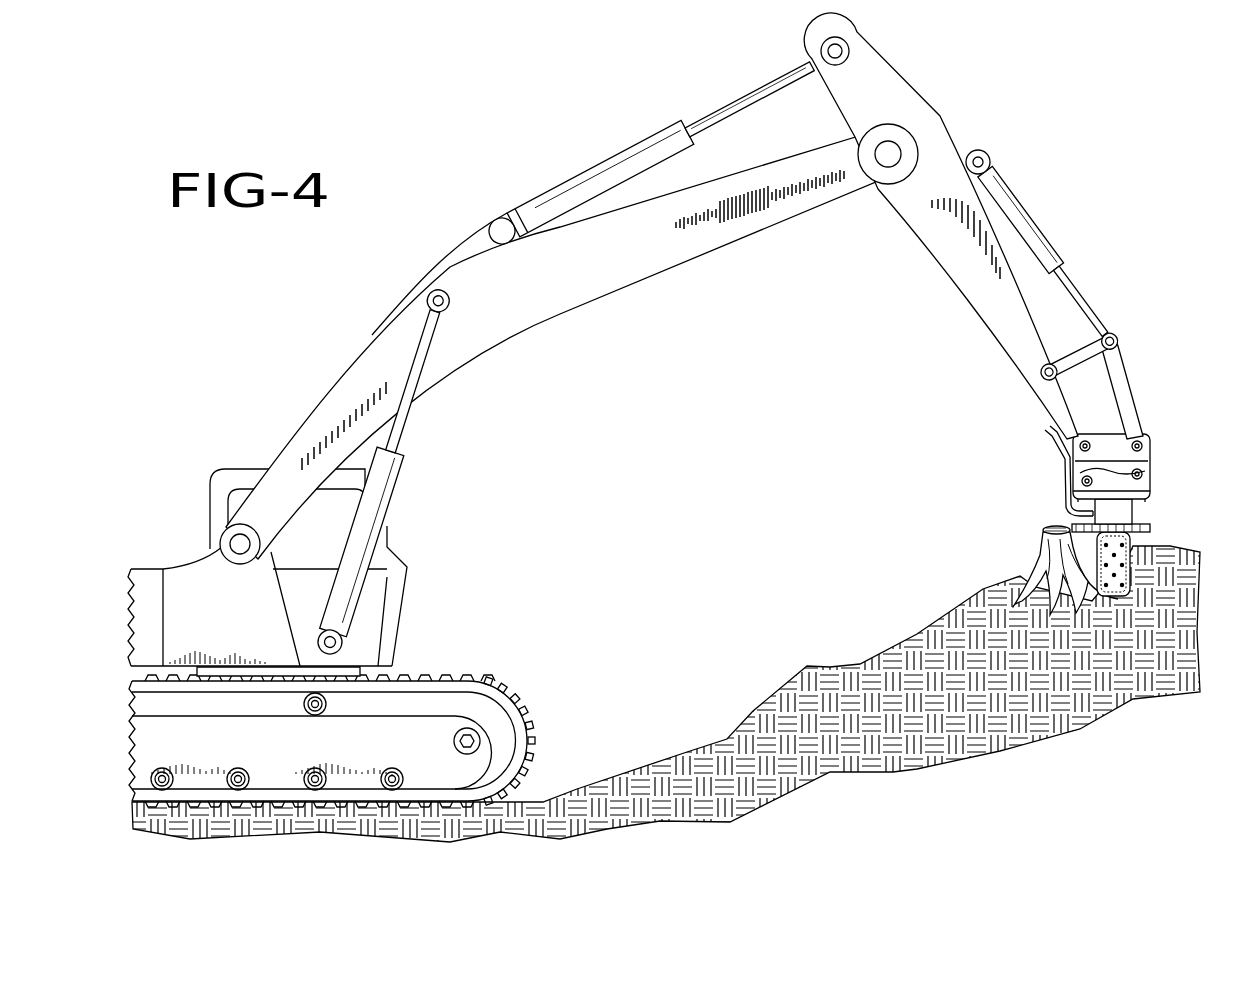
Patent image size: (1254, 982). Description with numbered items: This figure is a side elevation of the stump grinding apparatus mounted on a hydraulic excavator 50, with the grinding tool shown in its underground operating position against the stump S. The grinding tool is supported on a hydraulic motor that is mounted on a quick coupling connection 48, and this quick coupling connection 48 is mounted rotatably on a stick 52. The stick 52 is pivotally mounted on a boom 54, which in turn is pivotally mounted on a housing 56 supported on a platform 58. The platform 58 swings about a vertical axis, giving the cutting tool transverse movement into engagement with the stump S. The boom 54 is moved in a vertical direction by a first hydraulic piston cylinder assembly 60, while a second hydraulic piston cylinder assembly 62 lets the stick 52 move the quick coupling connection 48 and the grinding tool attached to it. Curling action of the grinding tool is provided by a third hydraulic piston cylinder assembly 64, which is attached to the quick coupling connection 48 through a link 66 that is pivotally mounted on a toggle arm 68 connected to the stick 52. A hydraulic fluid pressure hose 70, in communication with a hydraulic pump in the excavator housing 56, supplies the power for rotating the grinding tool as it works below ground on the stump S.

The hydraulic excavator 50 is at (528, 697).
The stick 52 is at (985, 314).
The boom 54 is at (570, 293).
The housing 56 is at (393, 545).
The platform 58 is at (360, 670).
The first hydraulic piston cylinder assembly 60 is at (387, 472).
The second hydraulic piston cylinder assembly 62 is at (590, 177).
The third hydraulic piston cylinder assembly 64 is at (1038, 238).
The link 66 is at (1123, 395).
The toggle arm 68 is at (1083, 353).
The hydraulic fluid pressure hose 70 is at (1050, 430).
The quick coupling connection 48 is at (1140, 475).
The stump S is at (1053, 567).